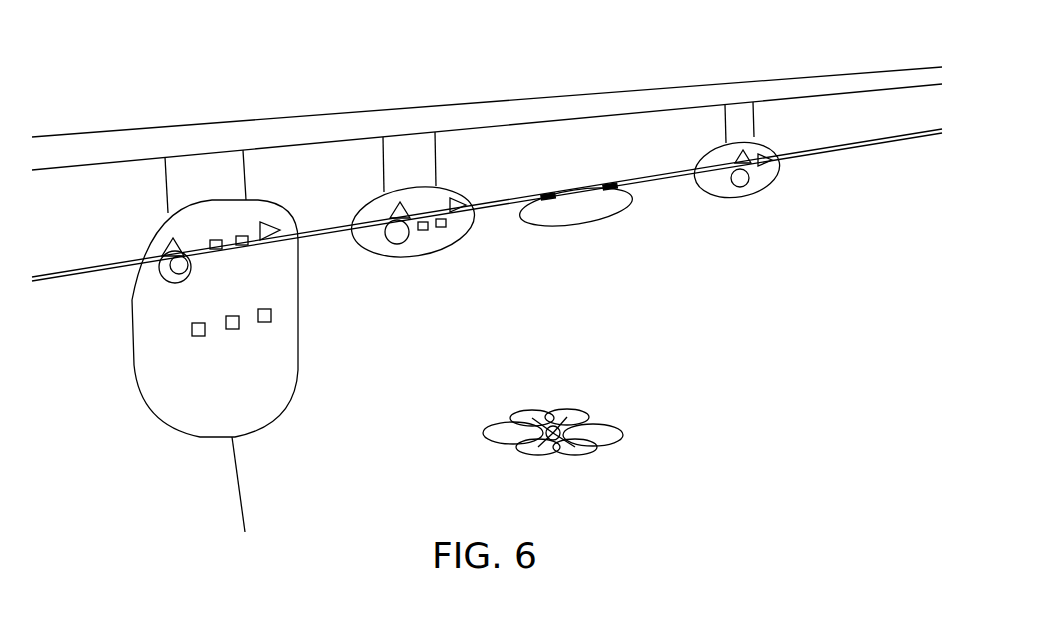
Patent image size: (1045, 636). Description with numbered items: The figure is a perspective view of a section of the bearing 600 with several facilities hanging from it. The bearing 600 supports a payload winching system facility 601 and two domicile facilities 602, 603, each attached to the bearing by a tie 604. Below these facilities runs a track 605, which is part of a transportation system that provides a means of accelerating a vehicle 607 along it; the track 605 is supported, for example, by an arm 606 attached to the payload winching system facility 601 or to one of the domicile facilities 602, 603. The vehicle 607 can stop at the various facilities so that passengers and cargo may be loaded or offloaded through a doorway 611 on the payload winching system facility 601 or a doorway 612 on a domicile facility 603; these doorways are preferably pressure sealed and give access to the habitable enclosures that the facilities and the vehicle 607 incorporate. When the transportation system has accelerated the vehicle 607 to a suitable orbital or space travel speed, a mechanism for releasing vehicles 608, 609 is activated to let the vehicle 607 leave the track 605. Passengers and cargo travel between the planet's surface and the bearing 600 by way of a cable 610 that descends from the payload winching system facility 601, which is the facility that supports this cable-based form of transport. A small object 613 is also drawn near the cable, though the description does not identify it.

The bearing 600 is at (453, 102).
The payload winching system facility 601 is at (302, 278).
The domicile facility 602 is at (466, 189).
The domicile facility 603 is at (775, 141).
The tie 604 is at (249, 182).
The track 605 is at (663, 183).
The arm 606 is at (281, 230).
The vehicle 607 is at (606, 220).
The mechanism for releasing vehicles 608 is at (550, 195).
The mechanism for releasing vehicles 609 is at (613, 185).
The cable 610 is at (250, 490).
The doorway 611 is at (199, 278).
The doorway 612 is at (750, 183).
The drone 613 is at (618, 418).